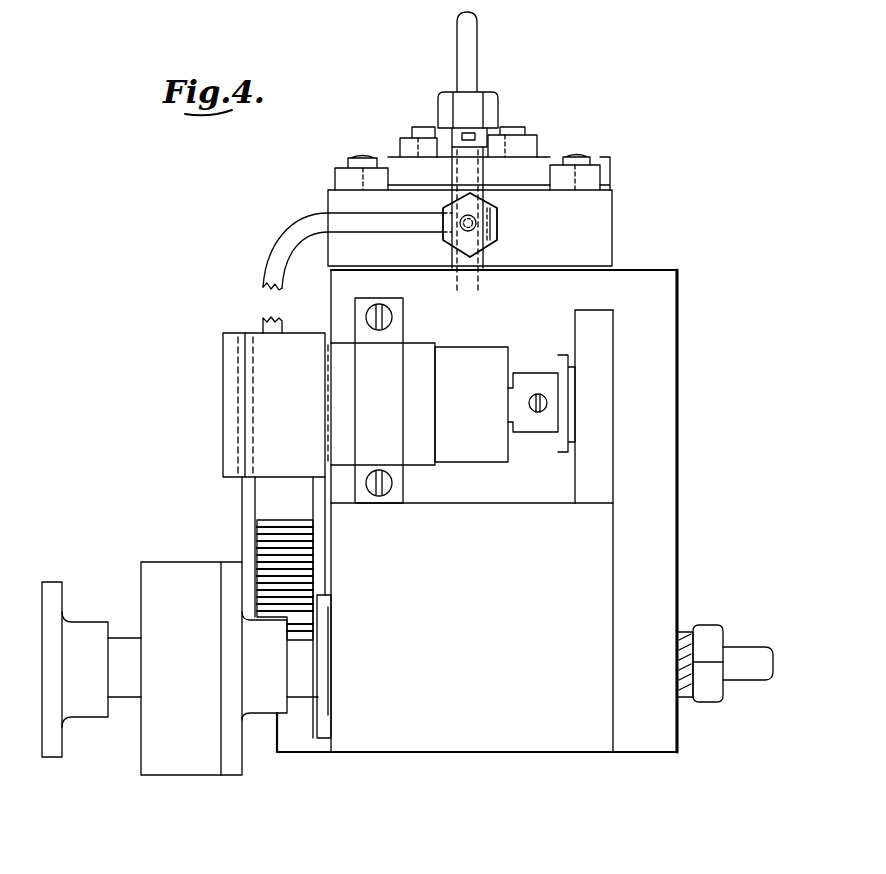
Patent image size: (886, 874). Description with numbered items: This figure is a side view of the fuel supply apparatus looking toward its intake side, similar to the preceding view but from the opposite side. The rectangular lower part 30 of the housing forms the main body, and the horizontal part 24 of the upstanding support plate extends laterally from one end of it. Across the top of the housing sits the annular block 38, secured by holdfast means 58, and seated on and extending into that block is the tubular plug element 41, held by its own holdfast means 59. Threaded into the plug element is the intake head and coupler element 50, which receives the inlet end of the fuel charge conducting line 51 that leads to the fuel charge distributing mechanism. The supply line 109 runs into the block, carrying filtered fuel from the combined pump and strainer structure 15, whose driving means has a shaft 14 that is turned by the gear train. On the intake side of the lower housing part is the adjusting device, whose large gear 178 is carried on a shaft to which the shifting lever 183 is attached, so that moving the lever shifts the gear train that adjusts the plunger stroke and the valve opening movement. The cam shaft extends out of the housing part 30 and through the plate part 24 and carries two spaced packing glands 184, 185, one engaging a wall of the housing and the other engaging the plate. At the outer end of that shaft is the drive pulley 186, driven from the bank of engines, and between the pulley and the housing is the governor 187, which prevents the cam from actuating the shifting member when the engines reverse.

The shaft 14 is at (513, 390).
The combined pump and strainer structure 15 is at (460, 365).
The horizontal part 24 is at (661, 405).
The rectangular lower part 30 is at (462, 728).
The annular block 38 is at (596, 225).
The tubular plug element 41 is at (402, 178).
The intake head and coupler element 50 is at (503, 107).
The fuel charge conducting line 51 is at (466, 38).
The holdfast means 58 is at (596, 178).
The holdfast means 59 is at (530, 142).
The supply line 109 is at (290, 248).
The gear 178 is at (297, 552).
The shifting lever 183 is at (247, 492).
The packing gland 184 is at (323, 697).
The packing gland 185 is at (700, 633).
The drive pulley 186 is at (83, 628).
The governor 187 is at (175, 755).